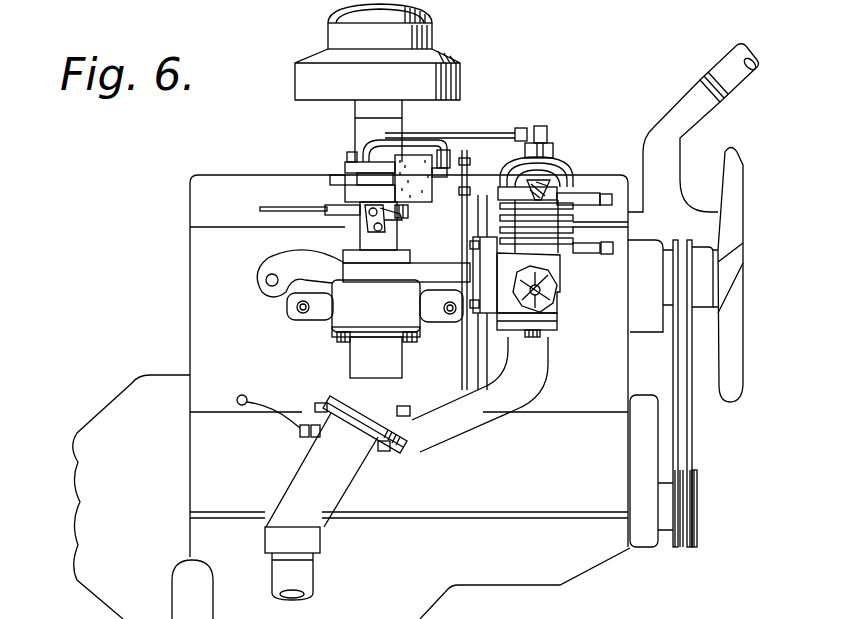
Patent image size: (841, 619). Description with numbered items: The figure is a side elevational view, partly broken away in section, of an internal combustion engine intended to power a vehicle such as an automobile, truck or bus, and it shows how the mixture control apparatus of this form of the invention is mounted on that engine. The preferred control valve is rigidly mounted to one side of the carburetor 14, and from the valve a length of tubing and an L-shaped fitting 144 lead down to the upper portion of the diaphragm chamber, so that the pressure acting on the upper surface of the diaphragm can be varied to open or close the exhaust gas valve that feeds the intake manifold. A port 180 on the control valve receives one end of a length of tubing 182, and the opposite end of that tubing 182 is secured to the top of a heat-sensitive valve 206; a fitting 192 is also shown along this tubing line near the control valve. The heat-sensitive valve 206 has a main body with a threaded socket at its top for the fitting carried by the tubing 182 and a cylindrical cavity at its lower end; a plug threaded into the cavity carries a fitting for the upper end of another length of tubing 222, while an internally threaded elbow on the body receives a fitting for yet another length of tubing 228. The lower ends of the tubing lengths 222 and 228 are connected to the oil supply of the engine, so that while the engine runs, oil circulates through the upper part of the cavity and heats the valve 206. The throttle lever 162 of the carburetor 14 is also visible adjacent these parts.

The carburetor 14 is at (333, 193).
The L-shaped fitting 144 is at (549, 129).
The throttle lever 162 is at (390, 238).
The port 180 is at (441, 158).
The tubing 182 is at (462, 137).
The pipe fitting 192 is at (506, 128).
The heat-sensitive valve 206 is at (446, 185).
The tubing 222 is at (463, 336).
The tubing 228 is at (484, 350).